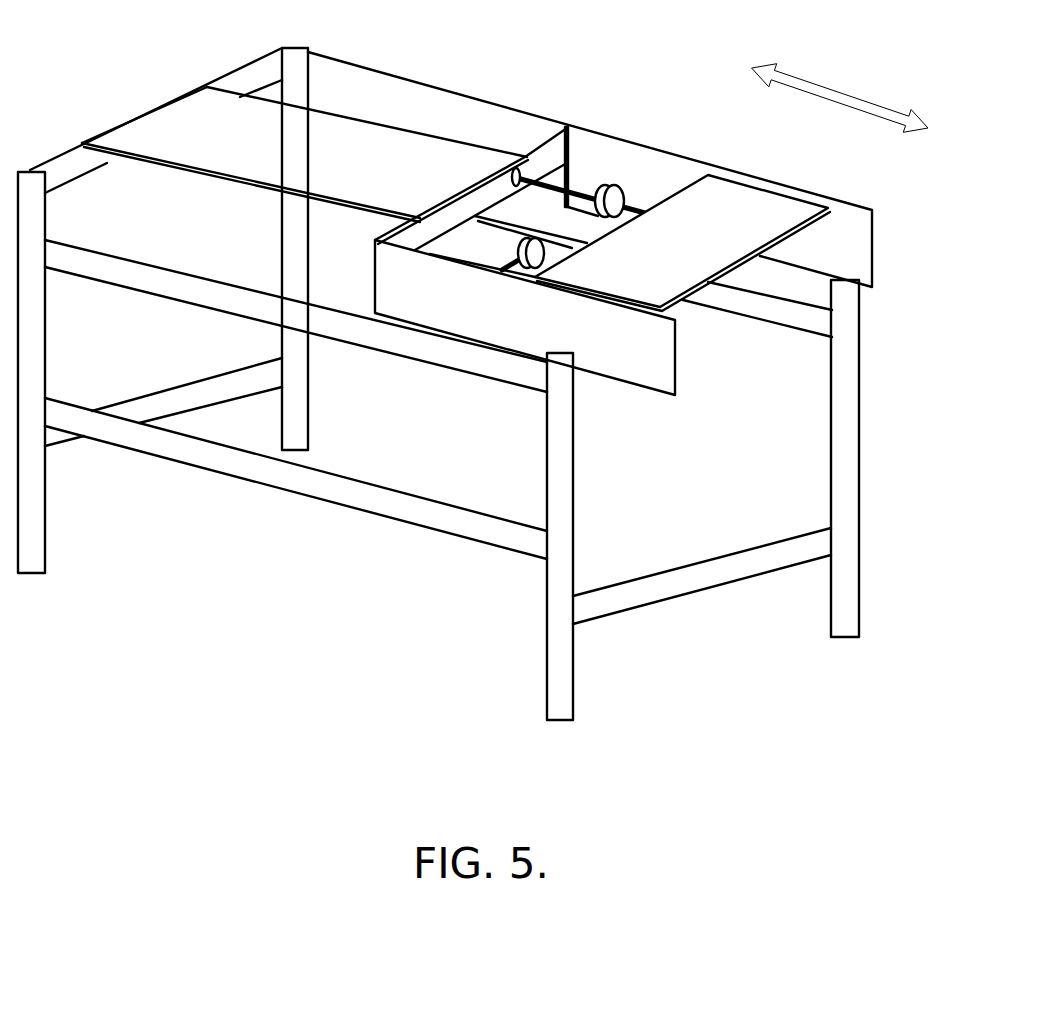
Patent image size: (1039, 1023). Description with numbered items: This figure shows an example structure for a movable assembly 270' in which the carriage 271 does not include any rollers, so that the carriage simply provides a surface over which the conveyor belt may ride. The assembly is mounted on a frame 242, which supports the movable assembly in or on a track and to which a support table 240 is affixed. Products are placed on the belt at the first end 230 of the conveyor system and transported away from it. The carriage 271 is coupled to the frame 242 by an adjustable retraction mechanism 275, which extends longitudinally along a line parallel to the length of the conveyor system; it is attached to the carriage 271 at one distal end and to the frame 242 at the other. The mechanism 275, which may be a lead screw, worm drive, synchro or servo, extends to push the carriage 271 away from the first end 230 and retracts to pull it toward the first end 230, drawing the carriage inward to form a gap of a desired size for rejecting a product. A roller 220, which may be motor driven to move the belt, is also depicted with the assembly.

The first end 230 is at (133, 102).
The support table 240 is at (230, 145).
The frame 242 is at (465, 523).
The movable assembly 270' is at (602, 218).
The carriage 271 is at (711, 116).
The adjustable retraction mechanism 275 is at (607, 188).
The roller 220 is at (525, 268).